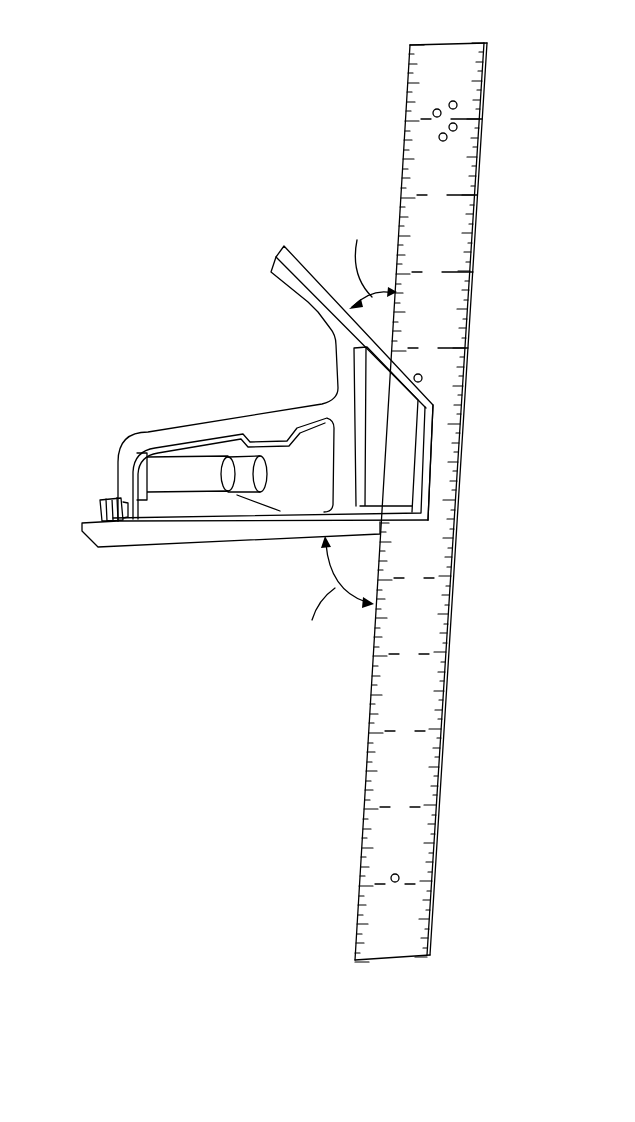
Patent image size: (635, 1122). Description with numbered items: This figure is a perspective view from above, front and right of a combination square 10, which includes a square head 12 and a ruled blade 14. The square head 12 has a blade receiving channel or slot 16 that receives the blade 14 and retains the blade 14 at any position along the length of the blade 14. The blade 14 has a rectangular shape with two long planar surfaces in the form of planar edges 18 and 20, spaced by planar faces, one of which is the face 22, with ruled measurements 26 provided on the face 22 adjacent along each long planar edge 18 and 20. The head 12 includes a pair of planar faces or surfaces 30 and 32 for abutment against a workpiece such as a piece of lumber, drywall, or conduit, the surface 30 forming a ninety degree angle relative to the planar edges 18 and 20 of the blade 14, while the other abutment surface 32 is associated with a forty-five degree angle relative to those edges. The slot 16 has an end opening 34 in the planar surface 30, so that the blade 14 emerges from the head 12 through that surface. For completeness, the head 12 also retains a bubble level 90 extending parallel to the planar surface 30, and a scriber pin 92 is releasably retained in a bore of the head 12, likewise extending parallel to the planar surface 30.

The combination square 10 is at (543, 95).
The square head 12 is at (122, 438).
The ruled blade 14 is at (412, 764).
The blade receiving channel or slot 16 is at (437, 467).
The planar edge 18 is at (363, 815).
The planar edge 20 is at (438, 820).
The planar face 22 is at (410, 608).
The ruled measurements 26 is at (474, 250).
The planar surface 30 is at (120, 548).
The planar surface 32 is at (298, 262).
The end opening 34 is at (415, 522).
The bubble level 90 is at (180, 460).
The scriber pin 92 is at (92, 501).